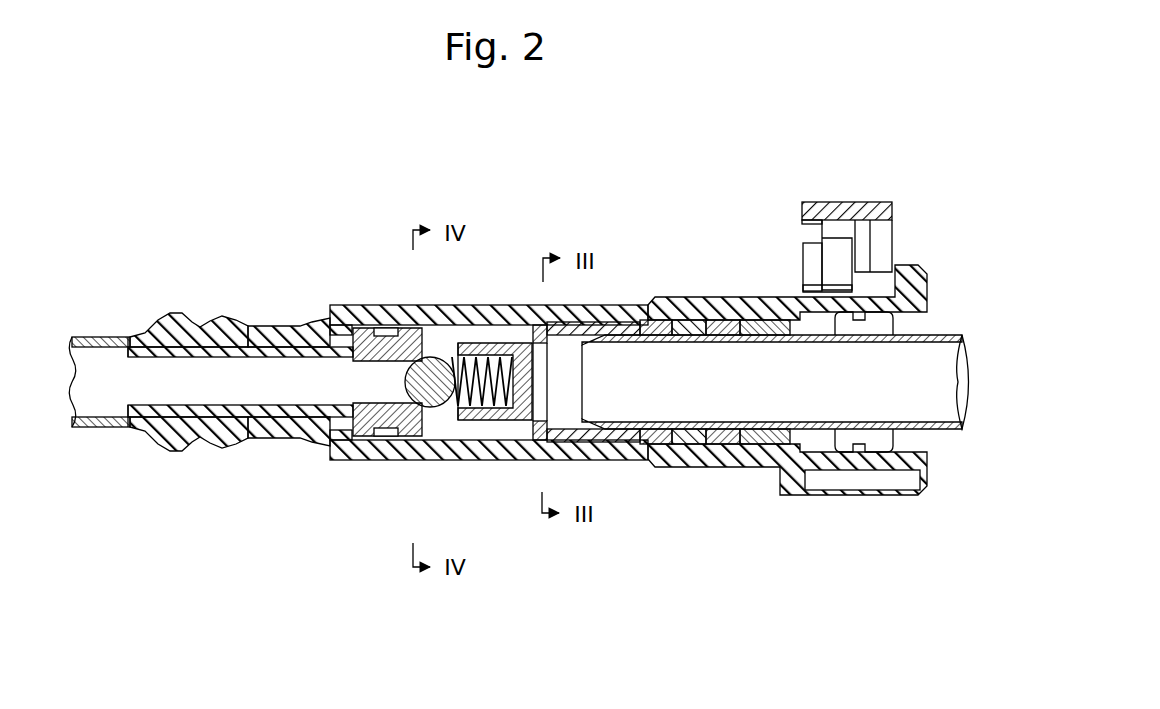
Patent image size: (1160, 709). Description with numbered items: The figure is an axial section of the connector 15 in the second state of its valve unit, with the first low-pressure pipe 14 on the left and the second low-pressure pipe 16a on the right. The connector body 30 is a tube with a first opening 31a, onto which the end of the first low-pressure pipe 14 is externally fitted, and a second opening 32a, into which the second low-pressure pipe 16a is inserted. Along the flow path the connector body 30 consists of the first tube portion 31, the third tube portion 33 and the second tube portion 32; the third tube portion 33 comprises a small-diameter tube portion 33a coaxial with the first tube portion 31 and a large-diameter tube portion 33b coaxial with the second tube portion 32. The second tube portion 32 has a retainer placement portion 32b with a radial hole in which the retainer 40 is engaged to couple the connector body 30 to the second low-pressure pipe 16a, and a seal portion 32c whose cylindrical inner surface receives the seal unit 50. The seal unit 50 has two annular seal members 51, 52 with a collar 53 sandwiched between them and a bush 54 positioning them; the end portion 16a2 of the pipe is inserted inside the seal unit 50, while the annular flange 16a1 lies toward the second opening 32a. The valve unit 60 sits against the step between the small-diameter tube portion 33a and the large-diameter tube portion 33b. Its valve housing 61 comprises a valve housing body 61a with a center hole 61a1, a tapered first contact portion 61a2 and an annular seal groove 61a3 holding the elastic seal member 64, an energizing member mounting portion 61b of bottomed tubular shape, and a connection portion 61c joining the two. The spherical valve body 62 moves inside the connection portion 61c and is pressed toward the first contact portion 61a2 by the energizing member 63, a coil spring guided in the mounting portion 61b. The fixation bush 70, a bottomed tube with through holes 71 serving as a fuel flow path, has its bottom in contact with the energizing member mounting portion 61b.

The first low-pressure pipe 14 is at (105, 420).
The connector 15 is at (884, 172).
The second low-pressure pipe 16a is at (780, 445).
The annular flange 16a1 is at (858, 444).
The end portion 16a2 is at (648, 410).
The connector body 30 is at (410, 303).
The first tube portion 31 is at (213, 348).
The first opening 31a is at (125, 365).
The second tube portion 32 is at (816, 339).
The second opening 32a is at (928, 312).
The retainer placement portion 32b is at (878, 300).
The seal portion 32c is at (706, 299).
The third tube portion 33 is at (244, 311).
The small-diameter tube portion 33a is at (300, 325).
The large-diameter tube portion 33b is at (340, 330).
The retainer 40 is at (835, 204).
The seal unit 50 is at (721, 453).
The annular seal member 51 is at (686, 455).
The annular seal member 52 is at (742, 455).
The collar 53 is at (716, 455).
The bush 54 is at (771, 431).
The valve unit 60 is at (396, 372).
The valve housing 61 is at (396, 410).
The valve housing body 61a is at (369, 393).
The center hole 61a1 is at (363, 400).
The first contact portion 61a2 is at (415, 358).
The annular seal groove 61a3 is at (380, 436).
The energizing member mounting portion 61b is at (518, 423).
The connection portion 61c is at (462, 421).
The valve body 62 is at (437, 406).
The energizing member 63 is at (478, 420).
The elastic seal member 64 is at (386, 326).
The fixation bush 70 is at (640, 322).
The through holes 71 is at (536, 338).